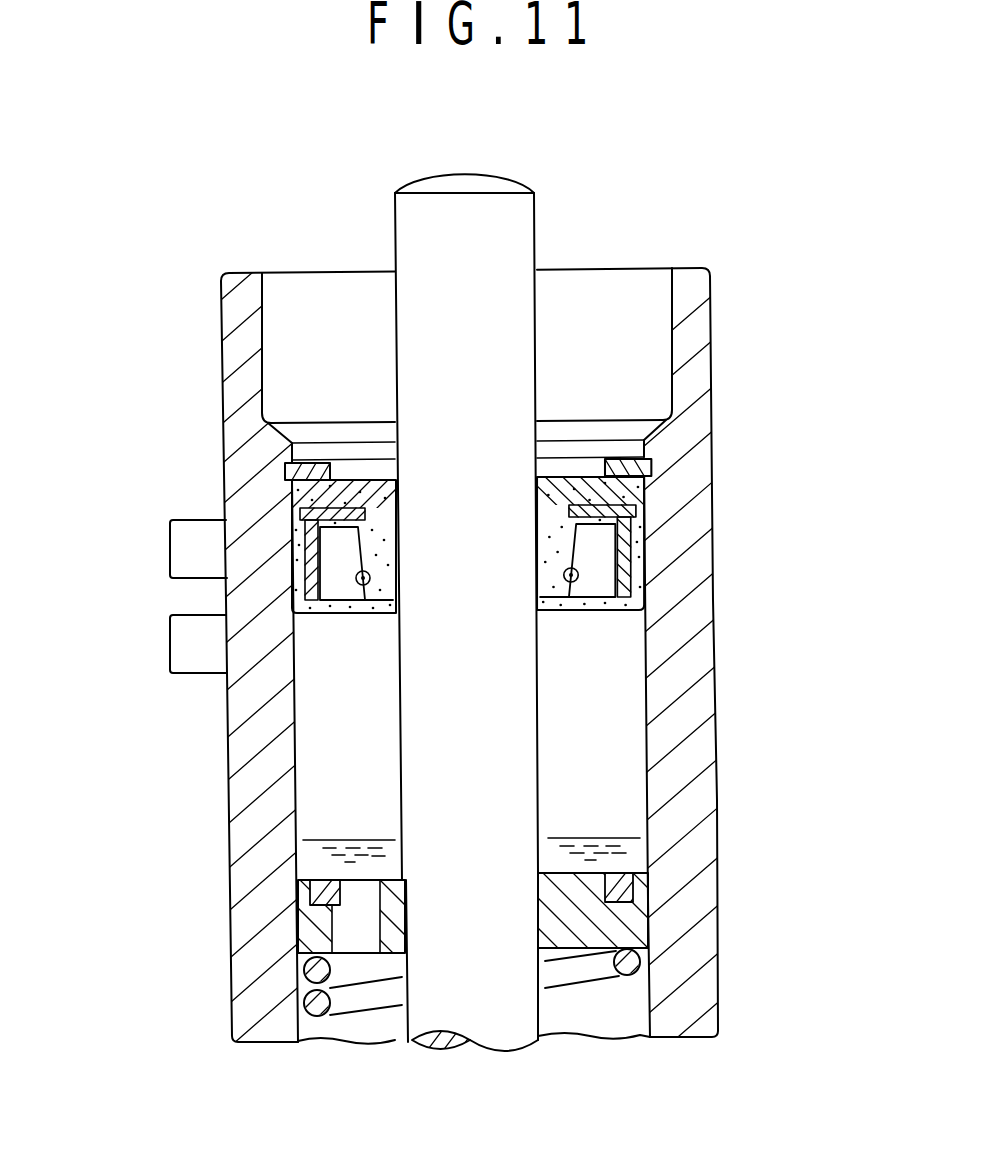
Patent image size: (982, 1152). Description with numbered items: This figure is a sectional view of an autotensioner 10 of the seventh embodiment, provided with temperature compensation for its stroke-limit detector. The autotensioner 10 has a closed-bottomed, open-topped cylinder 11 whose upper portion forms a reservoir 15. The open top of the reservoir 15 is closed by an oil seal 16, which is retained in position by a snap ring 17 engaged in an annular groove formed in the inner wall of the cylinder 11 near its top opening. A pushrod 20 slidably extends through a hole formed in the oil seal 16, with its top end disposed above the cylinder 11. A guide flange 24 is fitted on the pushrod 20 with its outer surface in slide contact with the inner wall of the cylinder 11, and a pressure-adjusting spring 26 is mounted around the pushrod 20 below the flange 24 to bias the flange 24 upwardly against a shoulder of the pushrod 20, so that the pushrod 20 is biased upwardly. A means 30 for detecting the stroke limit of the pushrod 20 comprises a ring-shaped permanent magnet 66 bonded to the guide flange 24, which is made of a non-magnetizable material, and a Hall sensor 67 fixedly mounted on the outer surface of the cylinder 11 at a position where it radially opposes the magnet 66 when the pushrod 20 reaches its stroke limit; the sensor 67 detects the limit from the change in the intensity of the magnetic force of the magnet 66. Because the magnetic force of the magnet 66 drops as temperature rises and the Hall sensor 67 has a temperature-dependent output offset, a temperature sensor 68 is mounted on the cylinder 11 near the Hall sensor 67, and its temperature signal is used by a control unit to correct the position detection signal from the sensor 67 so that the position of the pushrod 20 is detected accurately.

The autotensioner 10 is at (217, 262).
The cylinder 11 is at (223, 322).
The reservoir 15 is at (380, 1024).
The oil seal 16 is at (645, 500).
The snap ring 17 is at (650, 442).
The pushrod 20 is at (523, 704).
The guide flange 24 is at (313, 930).
The pressure-adjusting spring 26 is at (345, 1012).
The means for detecting the stroke limit 30 is at (162, 694).
The permanent magnet 66 is at (318, 880).
The Hall sensor 67 is at (187, 643).
The temperature sensor 68 is at (187, 540).